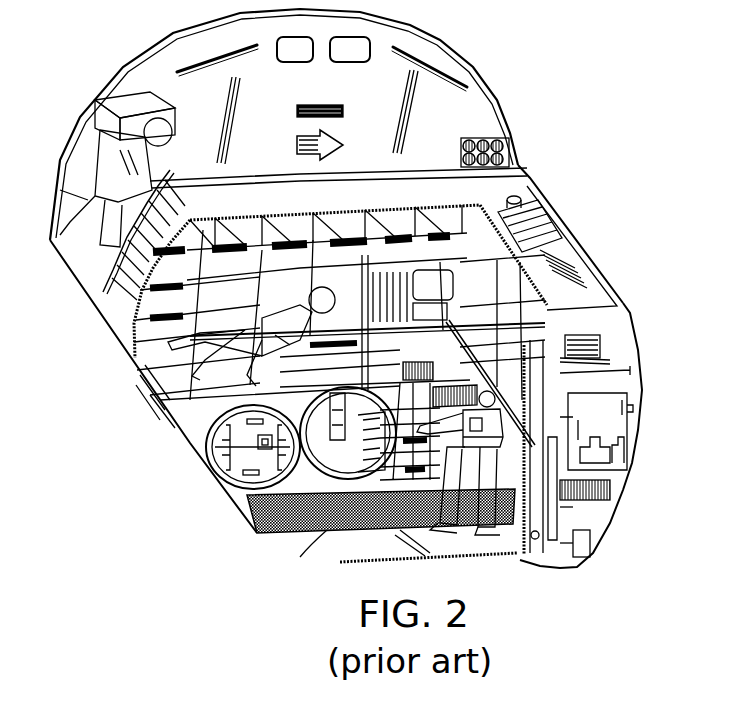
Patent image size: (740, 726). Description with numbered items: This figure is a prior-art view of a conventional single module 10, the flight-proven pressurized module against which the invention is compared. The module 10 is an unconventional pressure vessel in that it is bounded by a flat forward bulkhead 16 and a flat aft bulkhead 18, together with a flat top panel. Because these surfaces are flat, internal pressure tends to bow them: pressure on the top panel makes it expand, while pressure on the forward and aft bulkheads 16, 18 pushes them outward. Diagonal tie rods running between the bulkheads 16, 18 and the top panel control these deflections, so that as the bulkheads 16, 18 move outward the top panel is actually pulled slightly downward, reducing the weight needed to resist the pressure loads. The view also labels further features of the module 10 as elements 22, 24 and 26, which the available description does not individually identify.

The conventional single module 10 is at (603, 290).
The forward bulkhead 16 is at (533, 156).
The aft bulkhead 18 is at (630, 338).
The floor 22 is at (330, 532).
The hull 24 is at (480, 63).
The hatches 26 is at (197, 437).